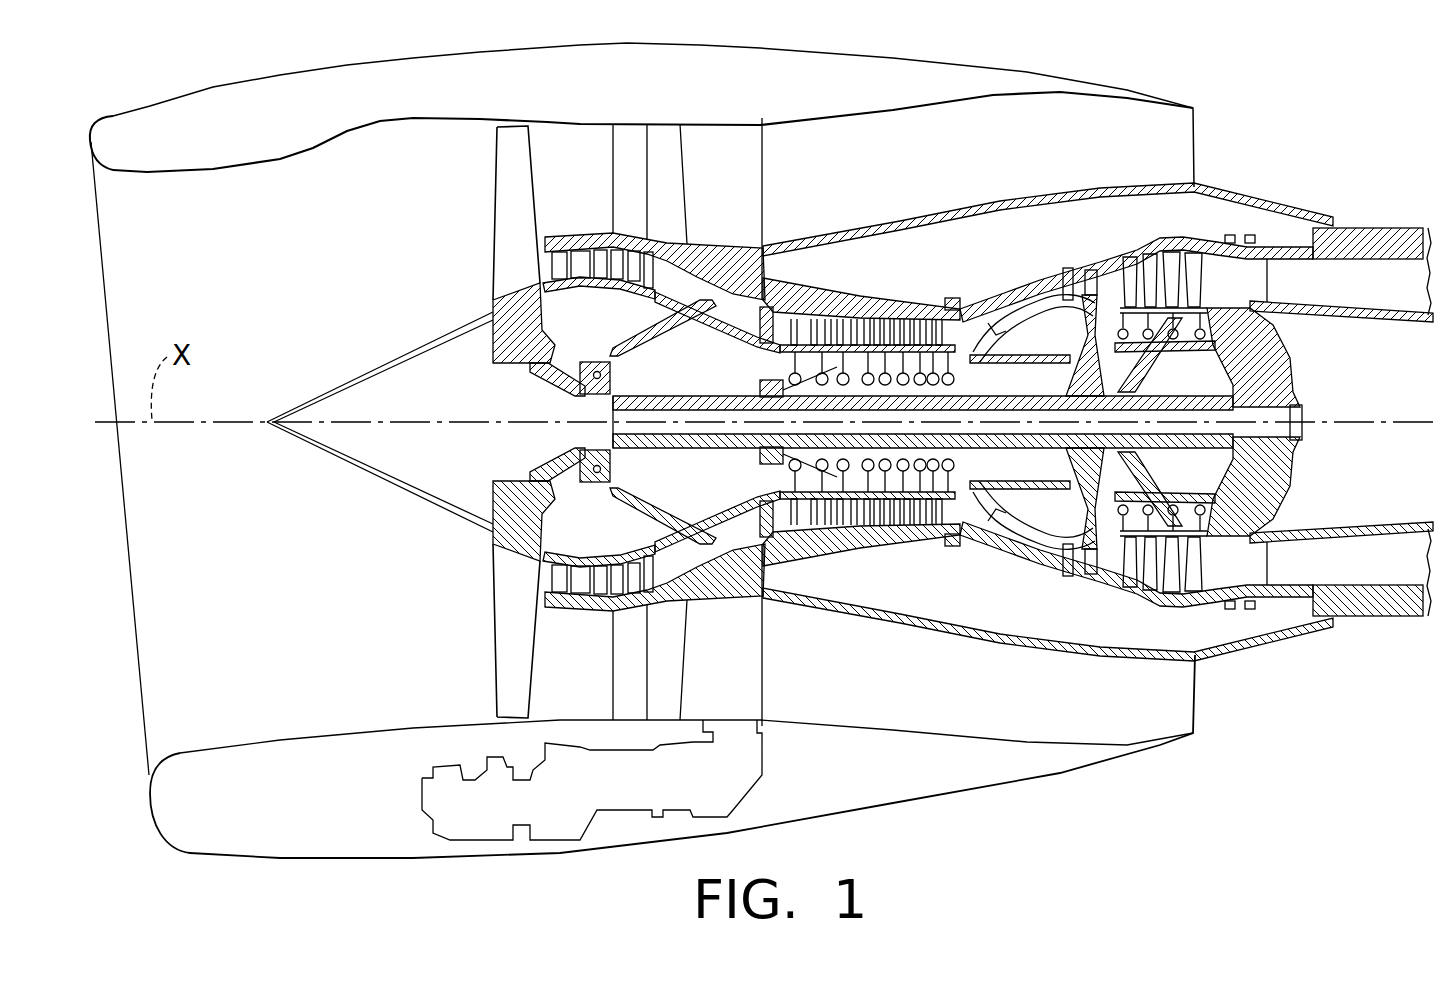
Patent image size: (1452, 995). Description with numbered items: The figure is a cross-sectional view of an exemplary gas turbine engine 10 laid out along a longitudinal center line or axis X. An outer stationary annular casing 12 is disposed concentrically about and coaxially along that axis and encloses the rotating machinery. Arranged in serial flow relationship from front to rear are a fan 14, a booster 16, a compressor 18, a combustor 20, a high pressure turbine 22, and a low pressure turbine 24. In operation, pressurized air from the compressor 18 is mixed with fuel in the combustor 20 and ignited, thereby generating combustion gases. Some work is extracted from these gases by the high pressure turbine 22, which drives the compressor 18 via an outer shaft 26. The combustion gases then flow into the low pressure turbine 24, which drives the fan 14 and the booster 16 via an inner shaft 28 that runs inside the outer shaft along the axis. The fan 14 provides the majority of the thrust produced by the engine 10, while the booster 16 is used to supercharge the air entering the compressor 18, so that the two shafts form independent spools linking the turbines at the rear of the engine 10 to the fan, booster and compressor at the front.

The gas turbine engine 10 is at (1225, 160).
The outer stationary annular casing 12 is at (847, 298).
The fan 14 is at (495, 568).
The booster 16 is at (575, 611).
The compressor 18 is at (862, 527).
The combustor 20 is at (1010, 525).
The high pressure turbine 22 is at (1100, 566).
The low pressure turbine 24 is at (1167, 598).
The outer shaft 26 is at (1050, 480).
The inner shaft 28 is at (1050, 400).